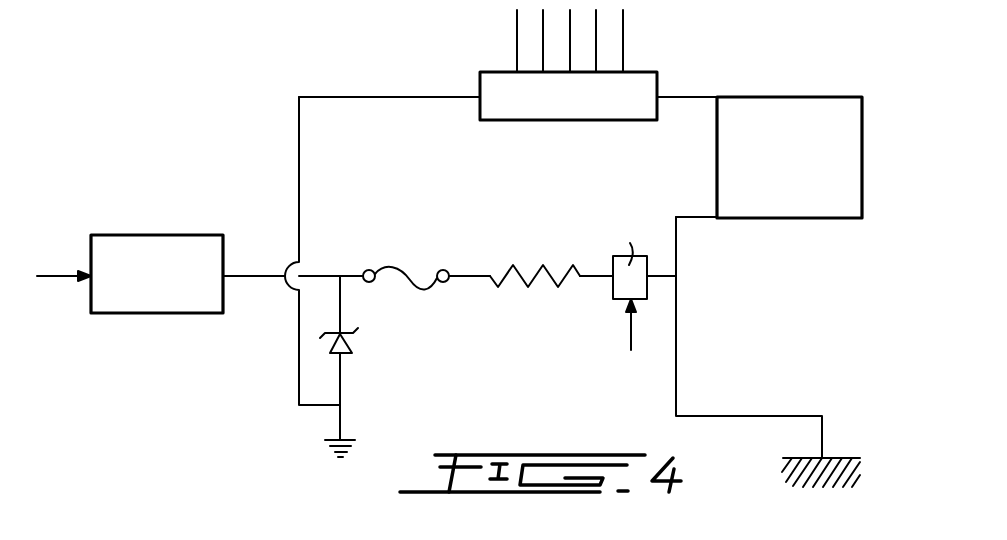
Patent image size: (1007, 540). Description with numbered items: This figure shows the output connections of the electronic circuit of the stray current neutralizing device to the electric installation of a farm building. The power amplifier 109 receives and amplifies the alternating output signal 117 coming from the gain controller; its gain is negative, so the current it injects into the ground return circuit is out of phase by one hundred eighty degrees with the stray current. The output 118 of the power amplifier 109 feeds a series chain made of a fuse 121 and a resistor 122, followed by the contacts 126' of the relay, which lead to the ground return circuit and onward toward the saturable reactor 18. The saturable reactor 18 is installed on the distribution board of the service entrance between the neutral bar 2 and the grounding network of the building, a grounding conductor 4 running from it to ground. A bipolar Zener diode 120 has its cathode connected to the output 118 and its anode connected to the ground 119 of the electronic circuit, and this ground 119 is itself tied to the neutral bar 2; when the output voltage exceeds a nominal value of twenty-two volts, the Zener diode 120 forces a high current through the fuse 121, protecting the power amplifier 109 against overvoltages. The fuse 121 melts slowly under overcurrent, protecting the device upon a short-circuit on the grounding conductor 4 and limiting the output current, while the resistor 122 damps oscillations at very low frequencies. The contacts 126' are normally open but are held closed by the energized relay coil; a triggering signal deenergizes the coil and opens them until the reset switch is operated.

The alternating output signal 117 is at (57, 272).
The power amplifier 109 is at (167, 236).
The output of the power amplifier 118 is at (253, 273).
The neutral bar 2 is at (485, 119).
The saturable reactor 18 is at (803, 210).
The fuse 121 is at (392, 265).
The resistor 122 is at (525, 267).
The relay contacts 126' is at (593, 269).
The bipolar Zener diode 120 is at (352, 353).
The ground 119 is at (330, 446).
The grounding conductor 4 is at (677, 386).